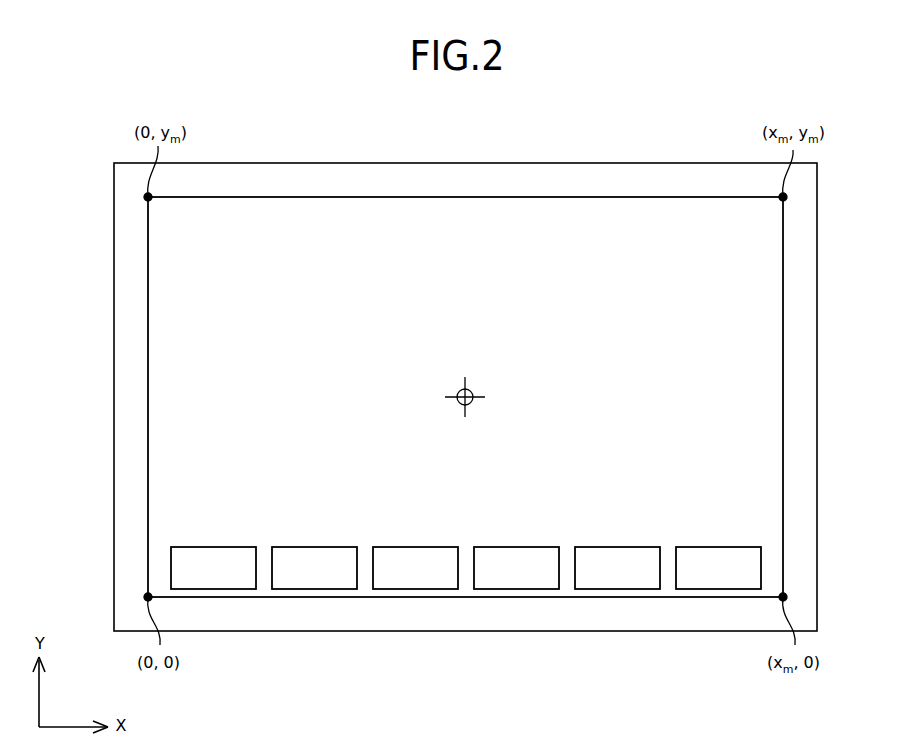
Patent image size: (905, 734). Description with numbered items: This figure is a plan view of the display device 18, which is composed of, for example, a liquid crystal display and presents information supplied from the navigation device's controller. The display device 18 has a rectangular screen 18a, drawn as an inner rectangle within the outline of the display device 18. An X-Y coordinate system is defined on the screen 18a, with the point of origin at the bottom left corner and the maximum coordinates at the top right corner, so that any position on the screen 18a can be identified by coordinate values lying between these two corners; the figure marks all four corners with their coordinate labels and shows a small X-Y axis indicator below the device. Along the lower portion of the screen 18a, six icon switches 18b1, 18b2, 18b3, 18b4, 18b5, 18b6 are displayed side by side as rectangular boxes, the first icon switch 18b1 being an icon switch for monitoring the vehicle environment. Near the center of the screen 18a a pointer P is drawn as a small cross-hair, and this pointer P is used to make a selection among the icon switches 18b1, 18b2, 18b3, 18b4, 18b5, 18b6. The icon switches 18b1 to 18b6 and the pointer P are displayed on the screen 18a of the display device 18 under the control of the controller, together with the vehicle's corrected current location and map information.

The display device 18 is at (697, 162).
The rectangular screen 18a is at (580, 197).
The icon switch 18b1 is at (212, 547).
The icon switch 18b2 is at (313, 547).
The icon switch 18b3 is at (414, 547).
The icon switch 18b4 is at (515, 547).
The icon switch 18b5 is at (616, 547).
The icon switch 18b6 is at (717, 547).
The pointer P is at (471, 391).